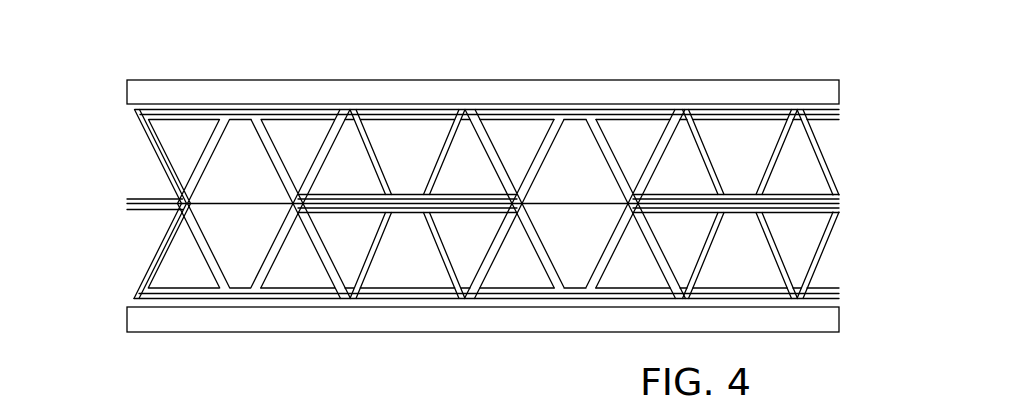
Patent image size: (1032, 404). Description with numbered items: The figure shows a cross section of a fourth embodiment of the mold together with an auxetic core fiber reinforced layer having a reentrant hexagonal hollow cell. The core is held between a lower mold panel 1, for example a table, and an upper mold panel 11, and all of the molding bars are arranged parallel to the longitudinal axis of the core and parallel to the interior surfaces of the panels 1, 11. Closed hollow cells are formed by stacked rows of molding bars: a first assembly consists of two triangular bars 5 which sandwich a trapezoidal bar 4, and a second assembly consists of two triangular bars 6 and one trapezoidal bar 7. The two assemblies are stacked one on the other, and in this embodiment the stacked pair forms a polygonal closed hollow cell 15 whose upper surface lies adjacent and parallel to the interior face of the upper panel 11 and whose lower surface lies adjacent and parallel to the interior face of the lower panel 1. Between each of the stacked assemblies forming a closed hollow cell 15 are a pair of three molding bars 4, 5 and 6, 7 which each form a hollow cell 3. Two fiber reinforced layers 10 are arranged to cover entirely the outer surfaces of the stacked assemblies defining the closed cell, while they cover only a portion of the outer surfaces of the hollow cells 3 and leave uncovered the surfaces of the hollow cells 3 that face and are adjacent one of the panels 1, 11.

The lower mold panel 1 is at (817, 320).
The upper mold panel 11 is at (817, 93).
The fiber reinforced layer 10 is at (142, 217).
The hollow cell 3 is at (410, 148).
The trapezoidal molding bar 4 is at (247, 263).
The triangular molding bar 5 is at (182, 263).
The triangular molding bar 6 is at (180, 140).
The trapezoidal molding bar 7 is at (238, 152).
The closed hollow cell 15 is at (569, 240).